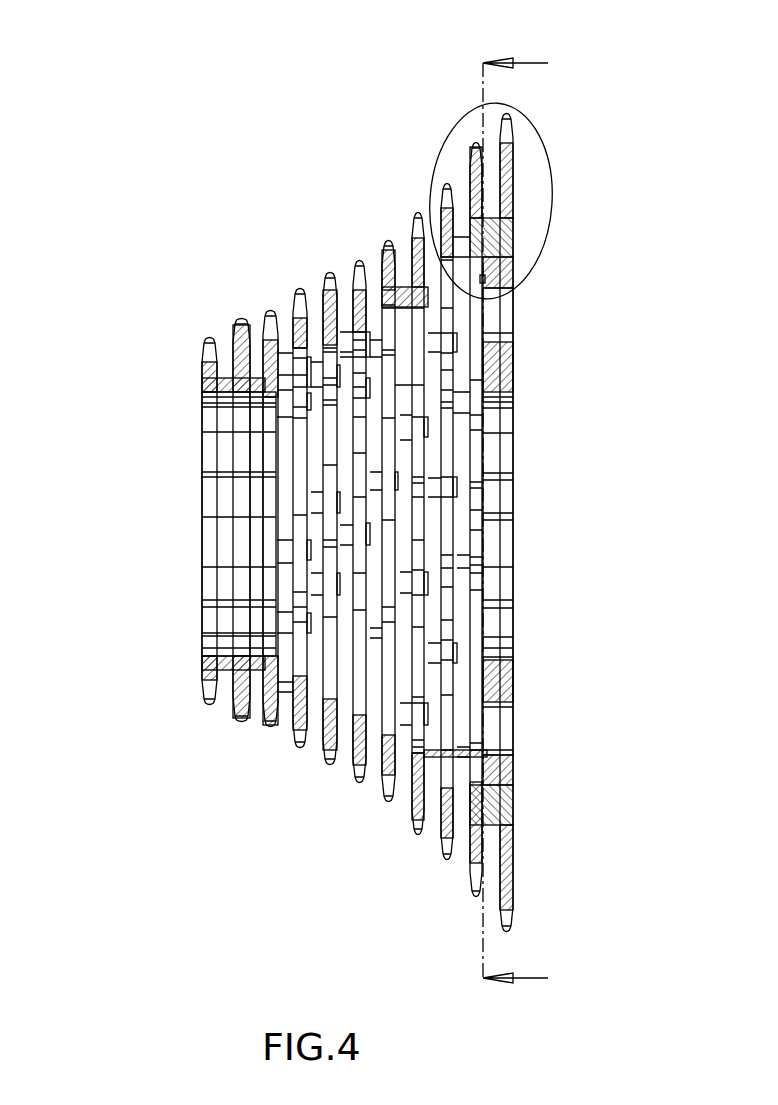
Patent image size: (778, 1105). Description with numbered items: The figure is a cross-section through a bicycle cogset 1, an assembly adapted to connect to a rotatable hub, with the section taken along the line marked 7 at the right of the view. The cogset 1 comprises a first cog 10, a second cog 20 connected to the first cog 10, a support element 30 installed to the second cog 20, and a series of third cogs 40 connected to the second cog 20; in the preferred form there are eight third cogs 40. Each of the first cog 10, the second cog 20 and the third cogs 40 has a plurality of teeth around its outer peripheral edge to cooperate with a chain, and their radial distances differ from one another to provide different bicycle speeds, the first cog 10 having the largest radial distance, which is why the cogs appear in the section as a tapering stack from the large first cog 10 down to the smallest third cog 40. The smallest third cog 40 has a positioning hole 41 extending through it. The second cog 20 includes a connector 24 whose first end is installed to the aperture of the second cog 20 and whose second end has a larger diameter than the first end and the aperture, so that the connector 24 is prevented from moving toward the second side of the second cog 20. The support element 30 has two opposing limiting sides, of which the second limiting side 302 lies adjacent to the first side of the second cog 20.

The cogset 1 is at (127, 193).
The third cog 40 is at (205, 293).
The positioning hole 41 is at (205, 407).
The second cog 20 is at (470, 183).
The first cog 10 is at (512, 185).
The connector 24 is at (512, 243).
The support element 30 is at (513, 275).
The second limiting side 302 is at (478, 278).
The section line 7- 7 is at (515, 528).